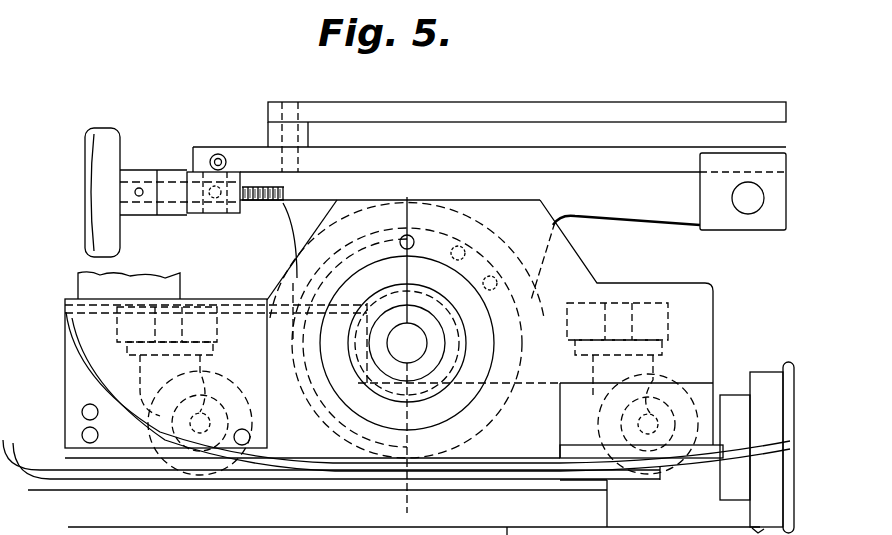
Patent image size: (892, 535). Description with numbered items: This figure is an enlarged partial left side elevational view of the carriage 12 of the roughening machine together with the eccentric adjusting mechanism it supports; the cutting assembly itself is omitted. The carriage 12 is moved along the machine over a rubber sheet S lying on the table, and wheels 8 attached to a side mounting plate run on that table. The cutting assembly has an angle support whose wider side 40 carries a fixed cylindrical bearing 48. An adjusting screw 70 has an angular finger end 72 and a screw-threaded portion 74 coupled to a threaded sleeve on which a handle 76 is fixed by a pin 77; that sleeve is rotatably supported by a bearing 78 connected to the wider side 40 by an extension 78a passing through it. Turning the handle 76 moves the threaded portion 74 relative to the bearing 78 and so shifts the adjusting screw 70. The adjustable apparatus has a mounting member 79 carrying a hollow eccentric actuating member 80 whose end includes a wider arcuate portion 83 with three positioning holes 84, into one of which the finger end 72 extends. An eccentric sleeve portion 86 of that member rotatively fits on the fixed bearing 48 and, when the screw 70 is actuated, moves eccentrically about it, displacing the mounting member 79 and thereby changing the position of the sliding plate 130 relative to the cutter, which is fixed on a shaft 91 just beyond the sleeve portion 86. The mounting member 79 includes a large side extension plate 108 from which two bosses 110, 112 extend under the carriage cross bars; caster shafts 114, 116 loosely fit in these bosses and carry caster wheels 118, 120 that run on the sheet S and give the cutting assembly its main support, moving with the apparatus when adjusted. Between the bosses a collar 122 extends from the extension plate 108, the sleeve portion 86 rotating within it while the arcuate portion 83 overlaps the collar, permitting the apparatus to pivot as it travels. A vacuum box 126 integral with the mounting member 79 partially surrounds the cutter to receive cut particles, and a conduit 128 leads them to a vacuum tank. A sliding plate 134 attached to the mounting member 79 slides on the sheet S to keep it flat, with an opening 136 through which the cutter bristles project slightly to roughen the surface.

The carriage 12 is at (621, 100).
The wheels 8 is at (766, 378).
The wider side 40 is at (296, 250).
The cylindrical bearing 48 is at (413, 316).
The adjusting screw 70 is at (323, 194).
The finger end 72 is at (462, 249).
The screw-threaded portion 74 is at (280, 204).
The handle 76 is at (98, 150).
The pin 77 is at (139, 188).
The bearing 78 is at (201, 216).
The extension 78a is at (215, 216).
The mounting member 79 is at (80, 382).
The eccentric actuating member 80 is at (516, 302).
The wider arcuate portion 83 is at (543, 297).
The positioning holes 84 is at (393, 252).
The eccentric sleeve portion 86 is at (468, 357).
The shaft 91 is at (387, 343).
The side extension plate 108 is at (562, 258).
The boss 110 is at (118, 327).
The boss 112 is at (576, 312).
The caster shaft 114 is at (217, 327).
The caster shaft 116 is at (642, 325).
The caster wheel 118 is at (238, 388).
The caster wheel 120 is at (677, 388).
The collar 122 is at (470, 412).
The vacuum box 126 is at (110, 367).
The conduit 128 is at (168, 285).
The sliding plate 130 is at (315, 476).
The sliding plate 134 is at (560, 463).
The opening 136 is at (517, 464).
The rubber sheet S is at (129, 478).